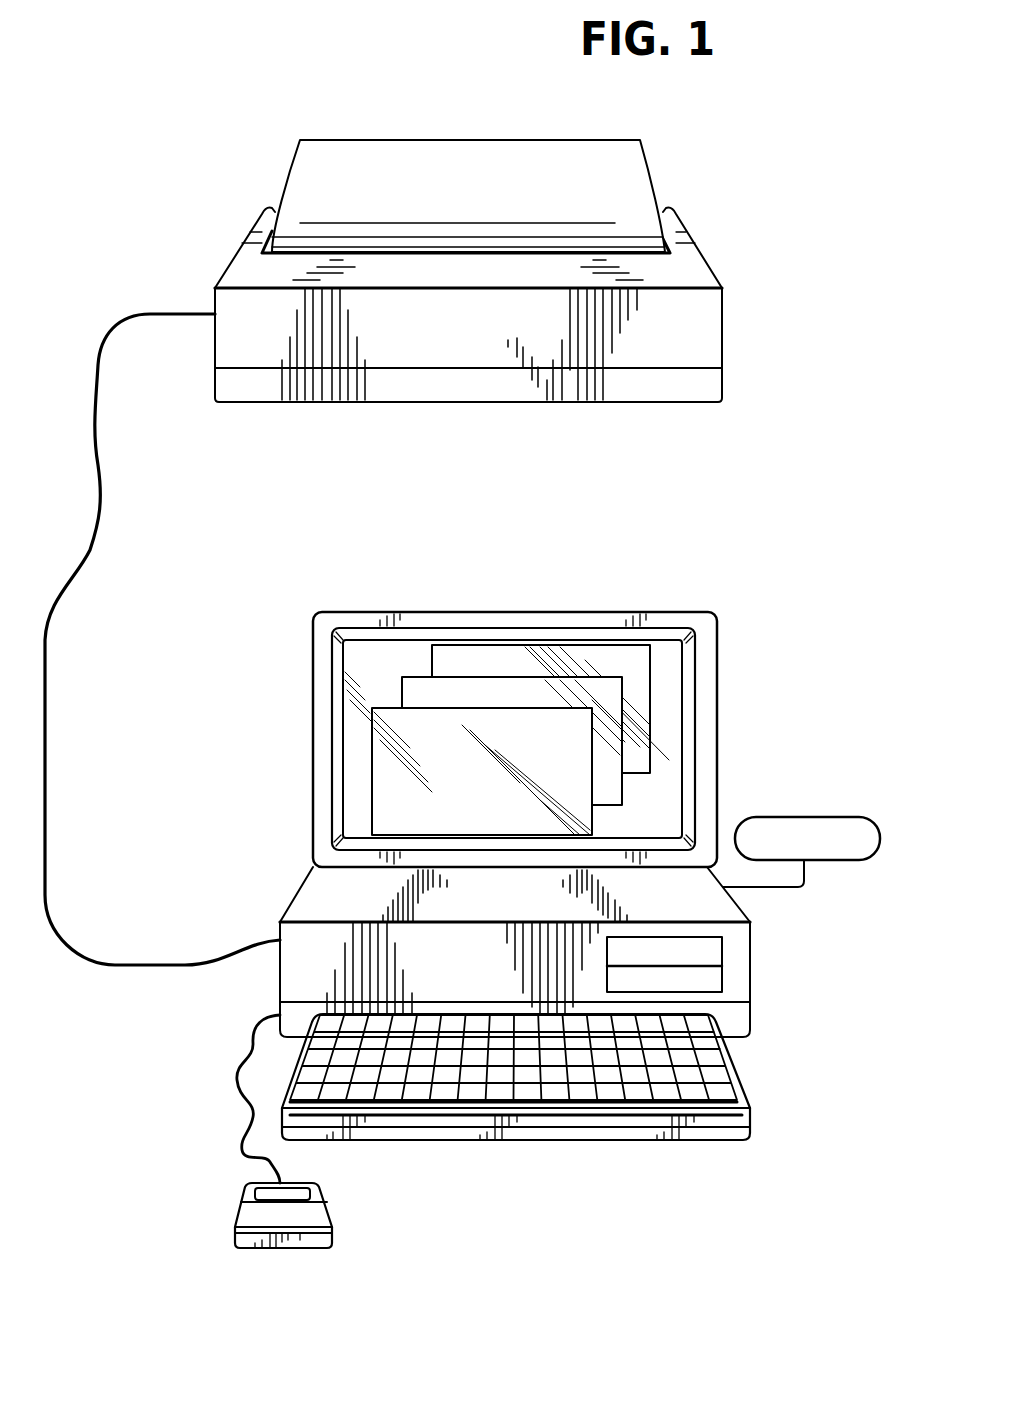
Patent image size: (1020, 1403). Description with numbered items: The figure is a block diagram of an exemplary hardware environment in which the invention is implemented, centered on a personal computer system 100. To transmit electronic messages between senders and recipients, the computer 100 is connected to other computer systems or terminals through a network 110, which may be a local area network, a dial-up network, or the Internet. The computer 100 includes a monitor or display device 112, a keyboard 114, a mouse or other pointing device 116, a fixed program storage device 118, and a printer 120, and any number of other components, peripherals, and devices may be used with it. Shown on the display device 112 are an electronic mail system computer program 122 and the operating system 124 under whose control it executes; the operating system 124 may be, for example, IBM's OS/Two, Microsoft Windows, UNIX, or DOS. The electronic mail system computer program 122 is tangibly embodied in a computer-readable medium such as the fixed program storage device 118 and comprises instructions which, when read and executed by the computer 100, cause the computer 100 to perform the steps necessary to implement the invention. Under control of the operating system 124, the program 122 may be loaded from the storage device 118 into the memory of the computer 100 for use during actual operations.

The personal computer system 100 is at (475, 860).
The network 110 is at (800, 817).
The monitor or display device 112 is at (430, 707).
The keyboard 114 is at (577, 1132).
The mouse or other pointing device 116 is at (252, 1217).
The fixed program storage device 118 is at (743, 978).
The printer 120 is at (451, 392).
The electronic mail system computer program 122 is at (372, 798).
The operating system 124 is at (388, 658).